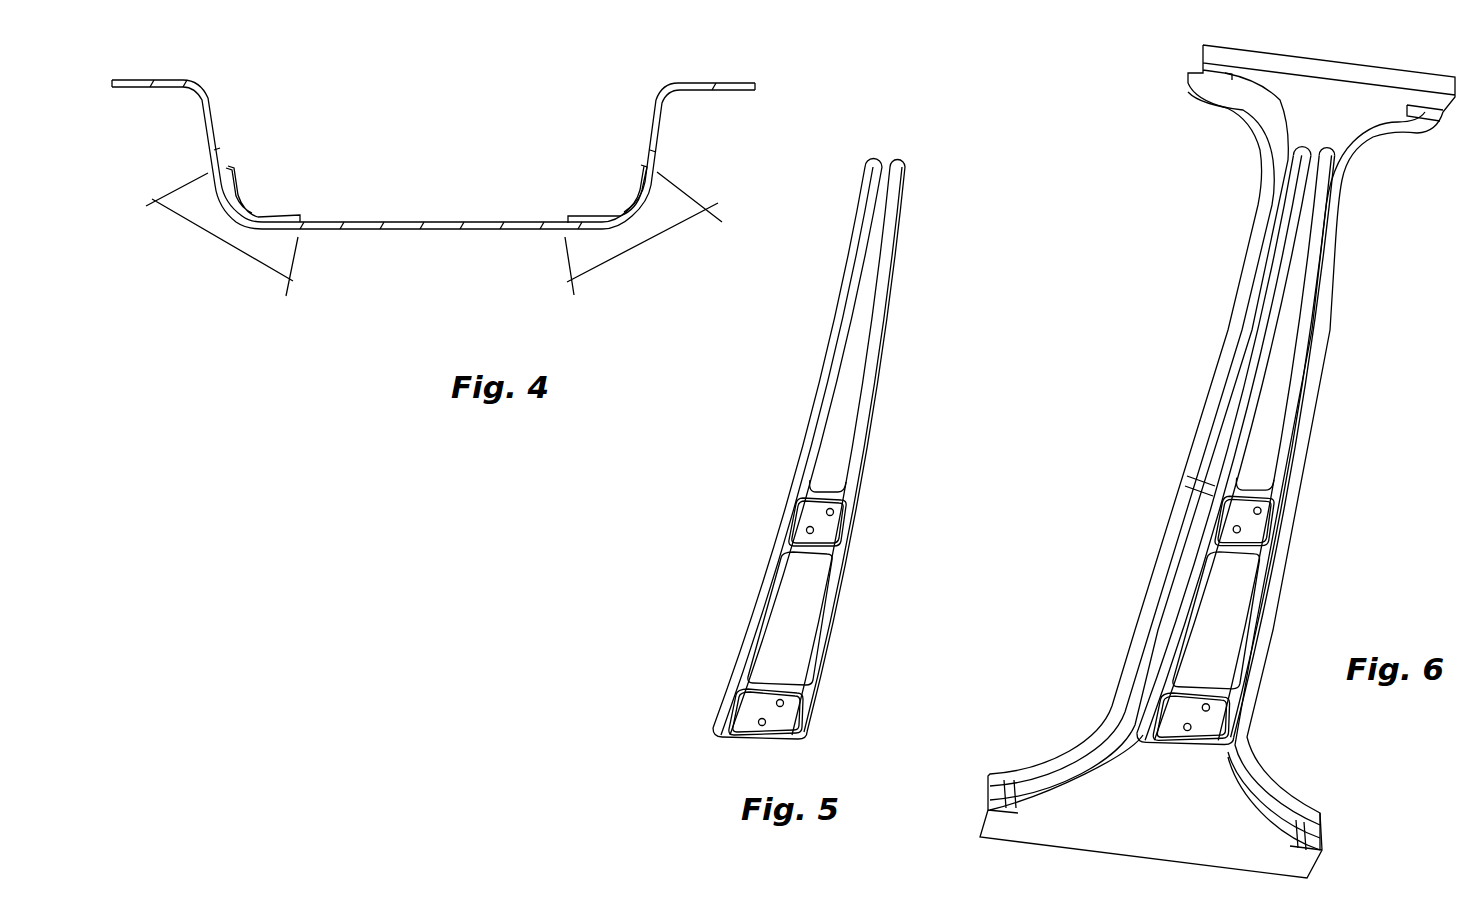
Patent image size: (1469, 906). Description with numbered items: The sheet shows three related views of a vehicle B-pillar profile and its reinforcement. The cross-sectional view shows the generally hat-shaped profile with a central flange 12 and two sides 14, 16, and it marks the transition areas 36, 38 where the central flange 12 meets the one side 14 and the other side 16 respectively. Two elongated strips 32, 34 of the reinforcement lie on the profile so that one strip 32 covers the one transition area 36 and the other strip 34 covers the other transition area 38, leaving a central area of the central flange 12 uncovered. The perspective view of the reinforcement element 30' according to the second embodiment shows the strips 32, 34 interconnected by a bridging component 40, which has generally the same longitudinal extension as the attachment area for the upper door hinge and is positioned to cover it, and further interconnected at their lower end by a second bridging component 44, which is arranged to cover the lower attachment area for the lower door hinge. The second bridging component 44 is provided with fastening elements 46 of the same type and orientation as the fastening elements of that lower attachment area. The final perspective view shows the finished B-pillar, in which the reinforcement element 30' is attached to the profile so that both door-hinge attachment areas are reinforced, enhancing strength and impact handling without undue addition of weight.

In FIG. 4, the central flange 12 is at (420, 224).
In FIG. 4, the side 14 is at (215, 133).
In FIG. 4, the side 16 is at (652, 130).
In FIG. 4, the strip 32 is at (298, 216).
In FIG. 5, the strip 32 is at (757, 597).
In FIG. 4, the strip 34 is at (623, 208).
In FIG. 5, the strip 34 is at (837, 593).
In FIG. 4, the transition area 36 is at (222, 234).
In FIG. 4, the transition area 38 is at (643, 233).
In FIG. 5, the reinforcement element 30' is at (880, 446).
In FIG. 5, the bridging component 40 is at (800, 518).
In FIG. 5, the second bridging component 44 is at (747, 703).
In FIG. 5, the fastening elements 46 is at (783, 705).